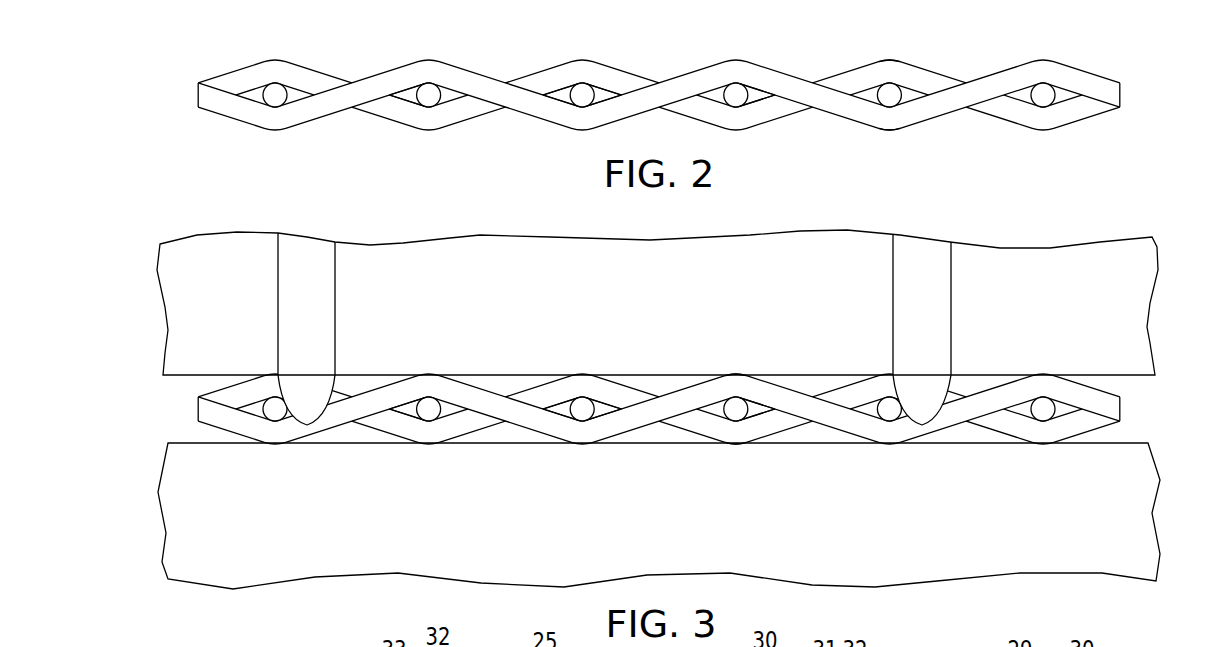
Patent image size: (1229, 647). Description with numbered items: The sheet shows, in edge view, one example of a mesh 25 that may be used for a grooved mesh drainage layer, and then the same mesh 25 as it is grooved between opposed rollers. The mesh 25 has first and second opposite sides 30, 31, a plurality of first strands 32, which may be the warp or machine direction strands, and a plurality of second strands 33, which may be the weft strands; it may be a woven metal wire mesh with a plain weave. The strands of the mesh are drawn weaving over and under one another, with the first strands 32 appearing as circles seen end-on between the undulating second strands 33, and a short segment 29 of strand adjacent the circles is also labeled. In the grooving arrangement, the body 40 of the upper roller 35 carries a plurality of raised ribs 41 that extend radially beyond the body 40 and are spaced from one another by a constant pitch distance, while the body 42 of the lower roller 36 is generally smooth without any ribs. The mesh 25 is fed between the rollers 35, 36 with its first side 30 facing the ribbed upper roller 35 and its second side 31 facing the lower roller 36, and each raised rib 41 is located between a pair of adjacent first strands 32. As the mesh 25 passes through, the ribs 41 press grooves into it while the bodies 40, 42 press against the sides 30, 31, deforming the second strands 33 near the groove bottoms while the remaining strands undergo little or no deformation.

In FIG. 2, the mesh 25 is at (608, 78).
In FIG. 3, the mesh 25 is at (595, 380).
In FIG. 2, the wire segment 29 is at (409, 98).
In FIG. 3, the wire segment 29 is at (398, 415).
In FIG. 2, the first side 30 is at (893, 62).
In FIG. 3, the first side 30 is at (733, 377).
In FIG. 2, the second side 31 is at (890, 130).
In FIG. 3, the second side 31 is at (738, 446).
In FIG. 2, the first strands 32 is at (431, 99).
In FIG. 3, the first strands 32 is at (431, 403).
In FIG. 2, the second strands 33 is at (612, 113).
In FIG. 3, the second strands 33 is at (540, 397).
In FIG. 3, the upper roller 35 is at (1128, 257).
In FIG. 3, the lower roller 36 is at (1146, 492).
In FIG. 3, the body 40 is at (657, 296).
In FIG. 3, the raised ribs 41 is at (297, 305).
In FIG. 3, the body 42 is at (682, 528).